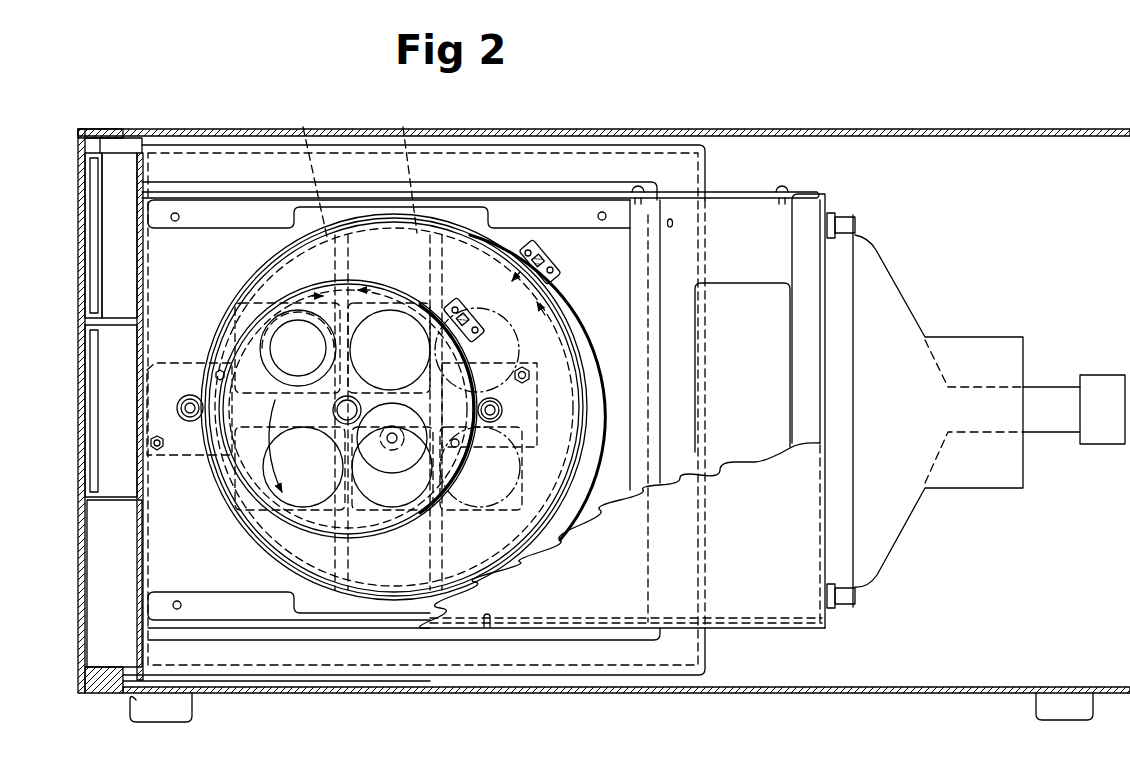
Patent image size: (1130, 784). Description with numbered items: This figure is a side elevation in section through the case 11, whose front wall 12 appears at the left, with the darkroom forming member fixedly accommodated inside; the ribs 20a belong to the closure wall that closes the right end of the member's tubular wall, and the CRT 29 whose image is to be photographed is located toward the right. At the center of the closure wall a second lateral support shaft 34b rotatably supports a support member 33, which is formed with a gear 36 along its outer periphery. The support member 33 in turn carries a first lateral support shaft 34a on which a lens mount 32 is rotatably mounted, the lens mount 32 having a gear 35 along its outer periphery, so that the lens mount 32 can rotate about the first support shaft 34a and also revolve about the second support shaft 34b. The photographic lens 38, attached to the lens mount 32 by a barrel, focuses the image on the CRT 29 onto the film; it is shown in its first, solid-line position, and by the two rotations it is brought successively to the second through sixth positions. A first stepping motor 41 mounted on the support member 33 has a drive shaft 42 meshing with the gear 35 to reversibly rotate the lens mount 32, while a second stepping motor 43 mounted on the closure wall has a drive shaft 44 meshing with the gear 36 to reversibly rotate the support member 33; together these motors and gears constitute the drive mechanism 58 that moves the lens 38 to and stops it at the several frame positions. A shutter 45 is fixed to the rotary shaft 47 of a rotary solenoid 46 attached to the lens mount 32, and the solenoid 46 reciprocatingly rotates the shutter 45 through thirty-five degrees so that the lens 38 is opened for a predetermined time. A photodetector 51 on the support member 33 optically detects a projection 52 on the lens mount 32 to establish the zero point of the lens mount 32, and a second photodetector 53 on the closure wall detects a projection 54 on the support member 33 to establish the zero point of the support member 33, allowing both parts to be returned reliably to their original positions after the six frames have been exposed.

The case 11 is at (677, 128).
The front wall 12 is at (80, 540).
The ribs 20a is at (588, 452).
The CRT 29 is at (887, 285).
The lens mount 32 is at (285, 522).
The support member 33 is at (323, 568).
The first support shaft 34a is at (337, 422).
The second support shaft 34b is at (392, 398).
The gear 35 is at (265, 508).
The gear 36 is at (383, 598).
The photographic lens 38 is at (292, 348).
The first stepping motor 41 is at (558, 470).
The drive shaft 42 is at (503, 410).
The second stepping motor 43 is at (170, 360).
The drive shaft 44 is at (177, 408).
The shutter 45 is at (218, 352).
The rotary solenoid 46 is at (428, 628).
The rotary shaft 47 is at (394, 445).
The photodetector 51 is at (470, 328).
The projection 52 is at (448, 306).
The second photodetector 53 is at (538, 254).
The projection 54 is at (550, 280).
The drive mechanism 58 is at (175, 462).